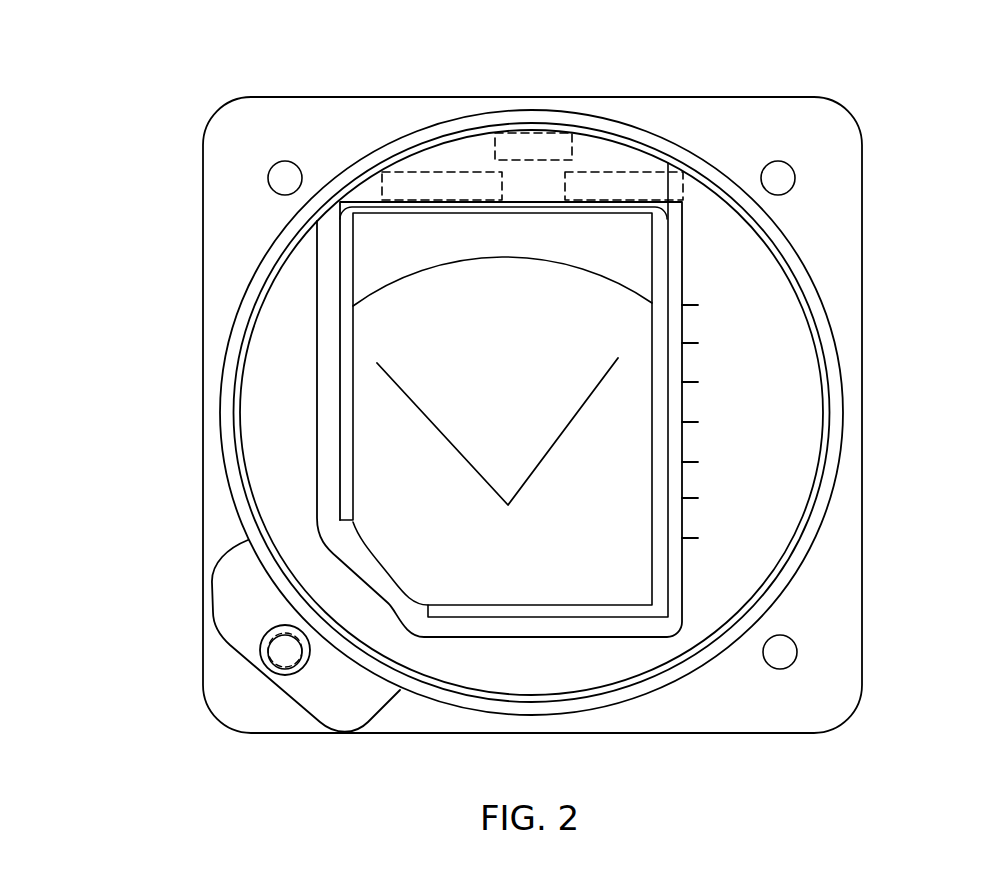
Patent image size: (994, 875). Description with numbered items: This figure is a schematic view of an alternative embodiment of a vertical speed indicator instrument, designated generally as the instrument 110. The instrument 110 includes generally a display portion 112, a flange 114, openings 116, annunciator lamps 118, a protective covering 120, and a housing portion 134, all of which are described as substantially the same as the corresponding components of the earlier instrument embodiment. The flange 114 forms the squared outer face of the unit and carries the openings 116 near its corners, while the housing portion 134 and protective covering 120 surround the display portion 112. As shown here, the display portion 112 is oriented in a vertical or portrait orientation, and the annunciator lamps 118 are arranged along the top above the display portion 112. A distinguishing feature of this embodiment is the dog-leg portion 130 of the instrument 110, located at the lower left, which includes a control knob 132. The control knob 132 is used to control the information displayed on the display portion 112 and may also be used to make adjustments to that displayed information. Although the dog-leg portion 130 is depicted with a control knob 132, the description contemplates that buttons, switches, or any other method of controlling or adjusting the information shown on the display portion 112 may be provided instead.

The instrument 110 is at (772, 64).
The display portion 112 is at (683, 487).
The flange 114 is at (842, 580).
The openings 116 is at (778, 669).
The annunciator lamps 118 is at (442, 178).
The protective covering 120 is at (802, 425).
The dog-leg portion 130 is at (242, 587).
The control knob 132 is at (262, 650).
The housing portion 134 is at (785, 247).